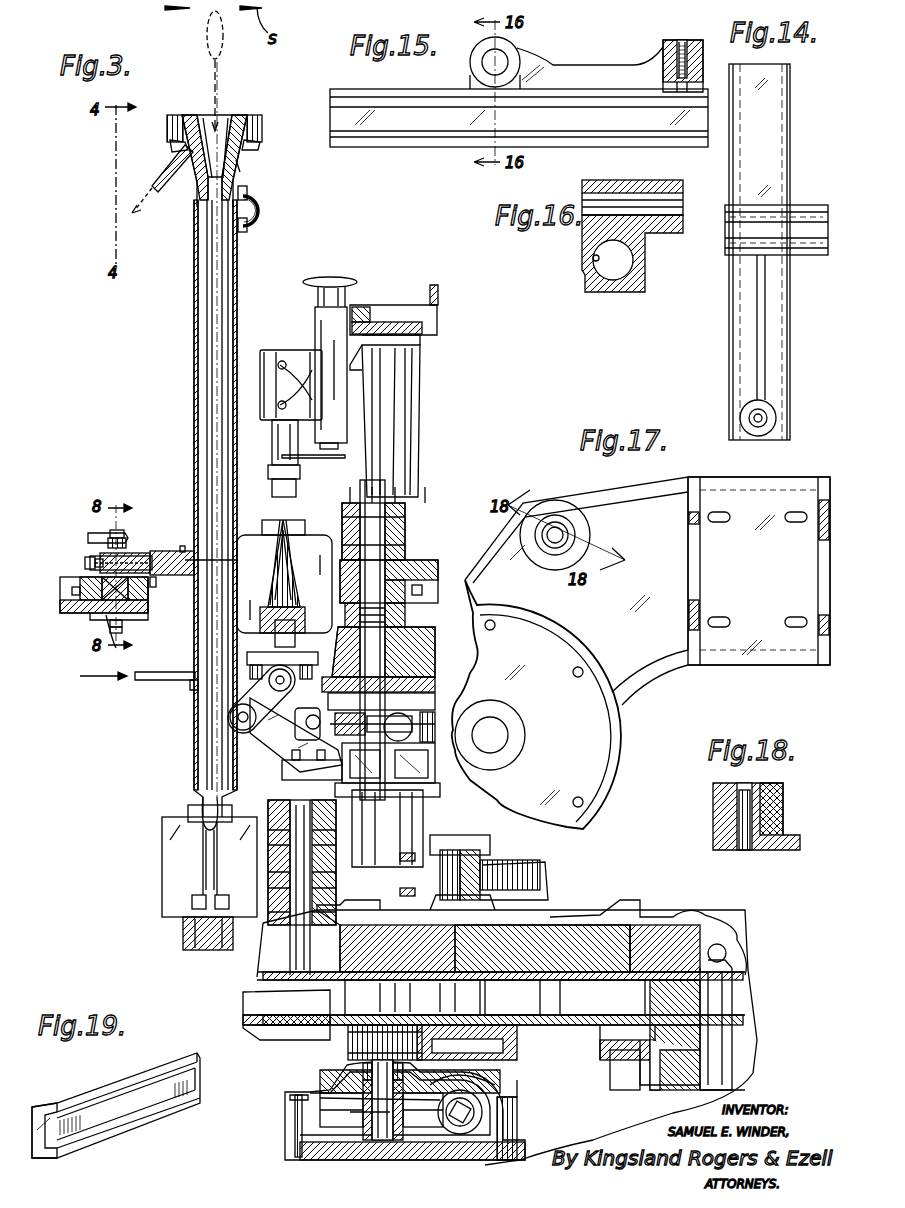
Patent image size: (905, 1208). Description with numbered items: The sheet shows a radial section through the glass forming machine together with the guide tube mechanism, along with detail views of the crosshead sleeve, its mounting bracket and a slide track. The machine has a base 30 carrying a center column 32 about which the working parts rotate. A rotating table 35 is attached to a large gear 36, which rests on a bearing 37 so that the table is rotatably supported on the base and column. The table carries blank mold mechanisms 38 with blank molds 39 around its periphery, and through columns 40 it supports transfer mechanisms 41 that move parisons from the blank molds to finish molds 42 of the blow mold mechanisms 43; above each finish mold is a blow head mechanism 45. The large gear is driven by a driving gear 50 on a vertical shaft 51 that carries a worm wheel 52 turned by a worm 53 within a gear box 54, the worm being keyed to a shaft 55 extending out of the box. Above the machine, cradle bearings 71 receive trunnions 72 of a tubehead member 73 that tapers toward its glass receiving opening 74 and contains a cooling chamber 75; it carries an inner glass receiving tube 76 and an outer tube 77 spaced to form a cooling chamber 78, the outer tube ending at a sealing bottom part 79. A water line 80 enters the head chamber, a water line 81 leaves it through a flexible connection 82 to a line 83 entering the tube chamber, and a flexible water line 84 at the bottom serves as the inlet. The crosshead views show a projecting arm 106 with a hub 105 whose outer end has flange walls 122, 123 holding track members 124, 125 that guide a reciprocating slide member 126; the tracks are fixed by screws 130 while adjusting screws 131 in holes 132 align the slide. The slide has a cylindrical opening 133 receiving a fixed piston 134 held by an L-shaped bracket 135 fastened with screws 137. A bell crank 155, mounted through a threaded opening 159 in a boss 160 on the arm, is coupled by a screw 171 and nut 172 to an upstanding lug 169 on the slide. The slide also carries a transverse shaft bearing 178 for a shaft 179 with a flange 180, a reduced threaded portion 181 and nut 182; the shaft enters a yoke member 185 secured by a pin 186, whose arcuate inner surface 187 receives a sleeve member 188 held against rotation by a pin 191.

In FIG. 3, the base 30 is at (300, 1158).
In FIG. 3, the center column 32 is at (673, 935).
In FIG. 3, the rotating table 35 is at (262, 1035).
In FIG. 3, the large gear 36 is at (465, 1003).
In FIG. 3, the bearing 37 is at (640, 1077).
In FIG. 3, the blank mold mechanisms 38 is at (350, 842).
In FIG. 3, the blank molds 39 is at (162, 890).
In FIG. 3, the columns 40 is at (395, 814).
In FIG. 3, the transfer mechanisms 41 is at (243, 752).
In FIG. 3, the finish molds 42 is at (320, 530).
In FIG. 3, the blow mold mechanisms 43 is at (410, 541).
In FIG. 3, the blow head mechanism 45 is at (252, 396).
In FIG. 3, the driving gear 50 is at (348, 1048).
In FIG. 3, the shaft 51 is at (383, 1115).
In FIG. 3, the worm wheel 52 is at (320, 1105).
In FIG. 3, the worm 53 is at (500, 1092).
In FIG. 3, the gear box 54 is at (475, 1078).
In FIG. 3, the shaft 55 is at (460, 1134).
In FIG. 3, the cradle bearings 71 is at (285, 155).
In FIG. 3, the trunnions 72 is at (263, 128).
In FIG. 3, the tubehead member 73 is at (192, 116).
In FIG. 3, the glass receiving opening 74 is at (232, 117).
In FIG. 3, the cooling chamber 75 is at (241, 165).
In FIG. 3, the inner glass receiving tube 76 is at (222, 262).
In FIG. 3, the outer tube 77 is at (194, 378).
In FIG. 3, the cooling chamber 78 is at (207, 470).
In FIG. 3, the bottom part 79 is at (190, 692).
In FIG. 3, the water line 80 is at (165, 195).
In FIG. 3, the water line 81 is at (248, 190).
In FIG. 3, the flexible connection 82 is at (268, 212).
In FIG. 3, the line 83 is at (248, 228).
In FIG. 3, the flexible water line 84 is at (150, 682).
In FIG. 17, the hub 105 is at (515, 732).
In FIG. 3, the projecting arm 106 is at (62, 603).
In FIG. 17, the projecting arm 106 is at (645, 478).
In FIG. 18, the projecting arm 106 is at (792, 860).
In FIG. 3, the vertical flange wall 122 is at (62, 580).
In FIG. 17, the vertical flange wall 122 is at (700, 568).
In FIG. 17, the vertical flange wall 123 is at (818, 578).
In FIG. 3, the track member 124 is at (75, 608).
In FIG. 19, the track member 124 is at (152, 1063).
In FIG. 3, the track member 125 is at (150, 602).
In FIG. 3, the reciprocating slide member 126 is at (122, 624).
In FIG. 15, the reciprocating slide member 126 is at (420, 140).
In FIG. 16, the reciprocating slide member 126 is at (588, 283).
In FIG. 14, the reciprocating slide member 126 is at (748, 340).
In FIG. 3, the screws 130 is at (95, 625).
In FIG. 3, the adjusting screws 131 is at (72, 590).
In FIG. 17, the holes 132 is at (695, 530).
In FIG. 16, the cylindrical opening 133 is at (592, 260).
In FIG. 3, the fixed piston 134 is at (95, 613).
In FIG. 3, the L-shaped bracket 135 is at (110, 640).
In FIG. 3, the screws 137 is at (122, 630).
In FIG. 3, the bell crank 155 is at (90, 532).
In FIG. 17, the threaded opening 159 is at (560, 520).
In FIG. 18, the threaded opening 159 is at (760, 815).
In FIG. 17, the boss 160 is at (585, 505).
In FIG. 18, the boss 160 is at (737, 810).
In FIG. 15, the upstanding lug 169 is at (664, 52).
In FIG. 14, the upstanding lug 169 is at (776, 418).
In FIG. 3, the screw 171 is at (126, 542).
In FIG. 3, the nut 172 is at (124, 532).
In FIG. 15, the transverse shaft bearing 178 is at (510, 52).
In FIG. 16, the transverse shaft bearing 178 is at (690, 178).
In FIG. 14, the transverse shaft bearing 178 is at (828, 200).
In FIG. 3, the shaft 179 is at (98, 556).
In FIG. 3, the flange 180 is at (176, 551).
In FIG. 3, the reduced threaded portion 181 is at (85, 560).
In FIG. 3, the nut 182 is at (95, 565).
In FIG. 3, the yoke member 185 is at (168, 580).
In FIG. 3, the pin 186 is at (150, 598).
In FIG. 3, the arcuate inner surface 187 is at (240, 565).
In FIG. 3, the sleeve member 188 is at (268, 560).
In FIG. 3, the pin 191 is at (237, 545).